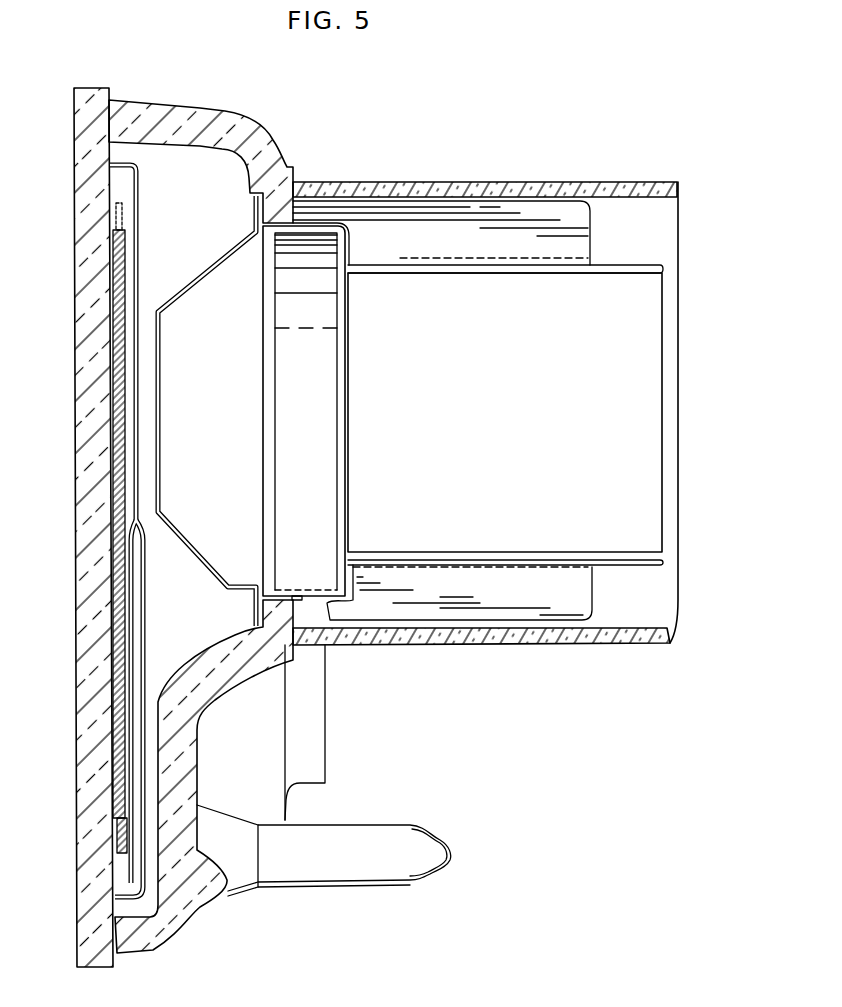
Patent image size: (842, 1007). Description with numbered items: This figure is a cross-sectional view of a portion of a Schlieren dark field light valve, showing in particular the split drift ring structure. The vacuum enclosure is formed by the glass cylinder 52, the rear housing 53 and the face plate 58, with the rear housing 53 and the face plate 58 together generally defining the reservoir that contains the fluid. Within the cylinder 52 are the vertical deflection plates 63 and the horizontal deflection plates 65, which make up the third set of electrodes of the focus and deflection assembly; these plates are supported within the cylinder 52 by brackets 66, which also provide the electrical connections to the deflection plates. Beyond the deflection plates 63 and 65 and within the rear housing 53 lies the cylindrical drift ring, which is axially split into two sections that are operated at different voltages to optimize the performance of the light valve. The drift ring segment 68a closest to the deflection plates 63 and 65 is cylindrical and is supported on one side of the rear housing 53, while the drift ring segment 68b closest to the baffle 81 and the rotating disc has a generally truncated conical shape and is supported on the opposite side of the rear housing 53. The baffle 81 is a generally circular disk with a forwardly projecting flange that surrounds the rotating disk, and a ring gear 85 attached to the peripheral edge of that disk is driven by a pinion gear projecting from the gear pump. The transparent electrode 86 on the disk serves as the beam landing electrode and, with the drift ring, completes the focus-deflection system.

The glass cylinder 52 is at (473, 182).
The rear housing 53 is at (187, 933).
The face plate 58 is at (76, 595).
The vertical deflection plates 63 is at (603, 263).
The horizontal deflection plates 65 is at (514, 357).
The brackets 66 is at (594, 598).
The drift ring segment 68a is at (320, 590).
The drift ring segment 68b is at (217, 577).
The baffle 81 is at (138, 213).
The ring gear 85 is at (118, 200).
The transparent electrode 86 is at (122, 262).